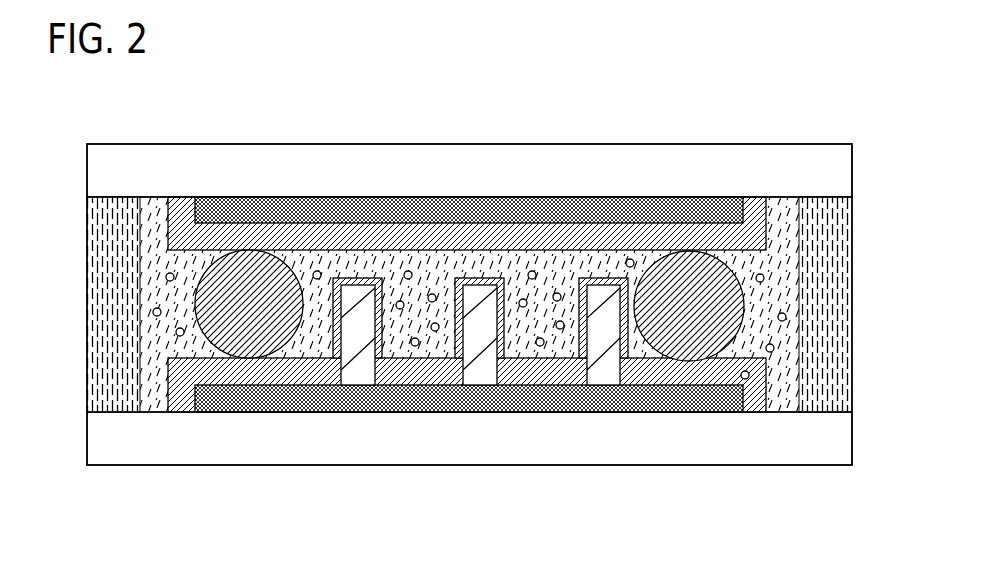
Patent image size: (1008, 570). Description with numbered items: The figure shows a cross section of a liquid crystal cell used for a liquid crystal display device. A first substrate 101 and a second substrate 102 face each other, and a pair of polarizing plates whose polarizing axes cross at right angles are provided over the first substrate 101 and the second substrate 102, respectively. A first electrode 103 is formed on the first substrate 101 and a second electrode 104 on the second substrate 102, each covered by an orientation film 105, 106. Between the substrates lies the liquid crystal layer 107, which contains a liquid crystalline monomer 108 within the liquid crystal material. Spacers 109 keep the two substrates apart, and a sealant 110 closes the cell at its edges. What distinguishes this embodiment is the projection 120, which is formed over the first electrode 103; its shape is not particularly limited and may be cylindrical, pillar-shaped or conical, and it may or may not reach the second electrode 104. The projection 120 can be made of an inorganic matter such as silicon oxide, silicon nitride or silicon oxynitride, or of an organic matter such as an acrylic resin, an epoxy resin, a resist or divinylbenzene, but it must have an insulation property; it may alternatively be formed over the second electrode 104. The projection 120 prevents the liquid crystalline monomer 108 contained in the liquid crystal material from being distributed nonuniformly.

The first substrate 101 is at (280, 443).
The second substrate 102 is at (320, 160).
The first electrode 103 is at (347, 412).
The second electrode 104 is at (340, 207).
The orientation film 105 is at (420, 375).
The orientation film 106 is at (462, 225).
The liquid crystal layer 107 is at (772, 273).
The liquid crystalline monomer 108 is at (552, 295).
The spacer 109 is at (243, 303).
The sealant 110 is at (105, 310).
The projection 120 is at (612, 290).